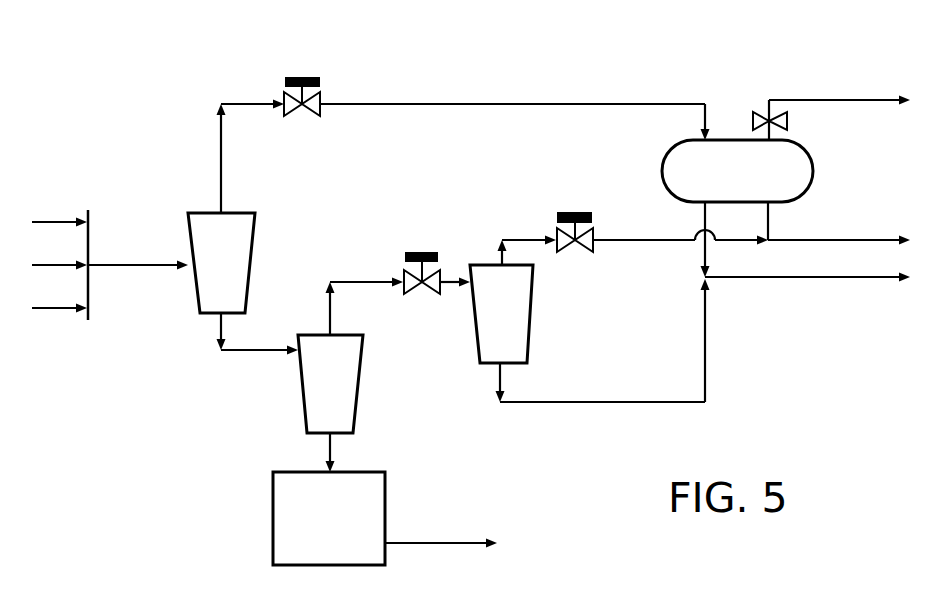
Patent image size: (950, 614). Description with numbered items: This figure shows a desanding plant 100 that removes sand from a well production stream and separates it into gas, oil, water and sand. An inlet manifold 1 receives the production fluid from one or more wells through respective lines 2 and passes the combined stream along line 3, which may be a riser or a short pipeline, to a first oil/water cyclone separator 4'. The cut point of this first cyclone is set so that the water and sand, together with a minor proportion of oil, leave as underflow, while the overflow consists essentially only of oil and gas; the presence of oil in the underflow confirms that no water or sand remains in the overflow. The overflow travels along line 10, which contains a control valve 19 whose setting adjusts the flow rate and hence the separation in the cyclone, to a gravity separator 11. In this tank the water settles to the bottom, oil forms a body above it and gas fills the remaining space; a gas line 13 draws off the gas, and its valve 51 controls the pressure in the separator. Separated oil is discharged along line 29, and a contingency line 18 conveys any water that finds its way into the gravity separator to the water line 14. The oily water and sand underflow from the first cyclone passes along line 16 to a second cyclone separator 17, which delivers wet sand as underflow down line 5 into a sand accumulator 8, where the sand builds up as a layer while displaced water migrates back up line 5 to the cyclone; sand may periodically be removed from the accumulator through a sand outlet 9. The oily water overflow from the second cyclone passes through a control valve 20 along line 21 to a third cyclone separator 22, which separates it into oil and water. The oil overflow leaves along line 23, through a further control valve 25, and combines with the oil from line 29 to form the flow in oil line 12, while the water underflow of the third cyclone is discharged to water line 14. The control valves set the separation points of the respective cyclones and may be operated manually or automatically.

The inlet manifold 1 is at (90, 222).
The line 2 is at (50, 220).
The line 3 is at (137, 267).
The first oil/water cyclone separator 4' is at (242, 263).
The line 5 is at (335, 456).
The sand accumulator 8 is at (273, 486).
The sand discharge line 9 is at (437, 544).
The line 10 is at (398, 104).
The gravity separator 11 is at (813, 170).
The oil line 12 is at (825, 239).
The gas line 13 is at (795, 100).
The water line 14 is at (777, 279).
The line 16 is at (251, 352).
The second cyclone separator 17 is at (365, 359).
The line 18 is at (708, 258).
The control valve 19 is at (303, 77).
The control valve 20 is at (422, 252).
The line 21 is at (360, 282).
The third cyclone separator 22 is at (535, 291).
The line 23 is at (527, 240).
The control valve 25 is at (575, 212).
The line 29 is at (766, 217).
The valve 51 is at (789, 123).
The desanding plant 100 is at (652, 73).